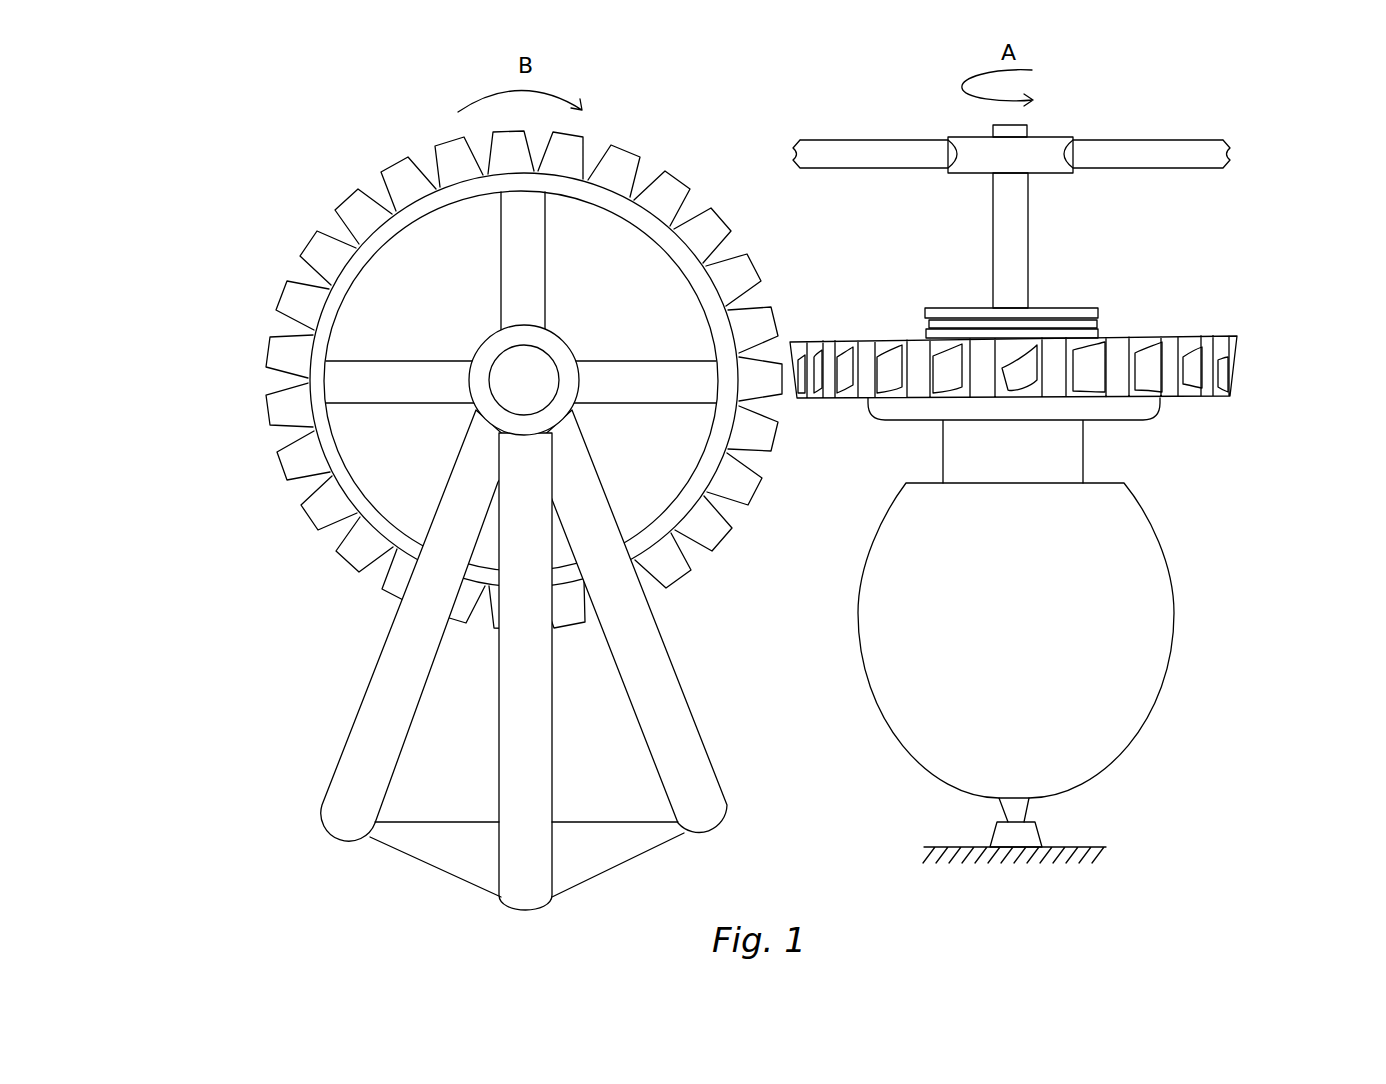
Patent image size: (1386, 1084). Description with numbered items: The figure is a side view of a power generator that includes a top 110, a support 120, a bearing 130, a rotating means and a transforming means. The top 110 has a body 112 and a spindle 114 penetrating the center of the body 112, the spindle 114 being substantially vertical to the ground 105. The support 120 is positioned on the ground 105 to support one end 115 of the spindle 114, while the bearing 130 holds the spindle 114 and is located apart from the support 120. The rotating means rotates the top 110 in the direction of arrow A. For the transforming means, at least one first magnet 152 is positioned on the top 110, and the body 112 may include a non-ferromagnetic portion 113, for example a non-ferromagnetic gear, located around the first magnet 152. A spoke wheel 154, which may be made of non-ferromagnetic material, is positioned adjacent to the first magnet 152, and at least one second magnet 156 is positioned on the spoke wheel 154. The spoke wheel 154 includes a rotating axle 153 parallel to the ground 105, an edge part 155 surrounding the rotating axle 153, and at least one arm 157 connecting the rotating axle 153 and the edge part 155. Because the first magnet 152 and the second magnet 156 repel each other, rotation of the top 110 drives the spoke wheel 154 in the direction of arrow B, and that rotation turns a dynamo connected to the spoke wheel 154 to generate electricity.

The ground 105 is at (1038, 921).
The top 110 is at (1072, 478).
The body 112 is at (1136, 622).
The non-ferromagnetic portion 113 is at (1210, 390).
The spindle 114 is at (1015, 242).
The end 115 is at (1022, 807).
The support 120 is at (1144, 838).
The bearing 130 is at (1033, 137).
The first magnet 152 is at (1024, 360).
The rotating axle 153 is at (500, 389).
The spoke wheel 154 is at (453, 505).
The edge part 155 is at (333, 297).
The second magnet 156 is at (670, 173).
The arm 157 is at (515, 243).